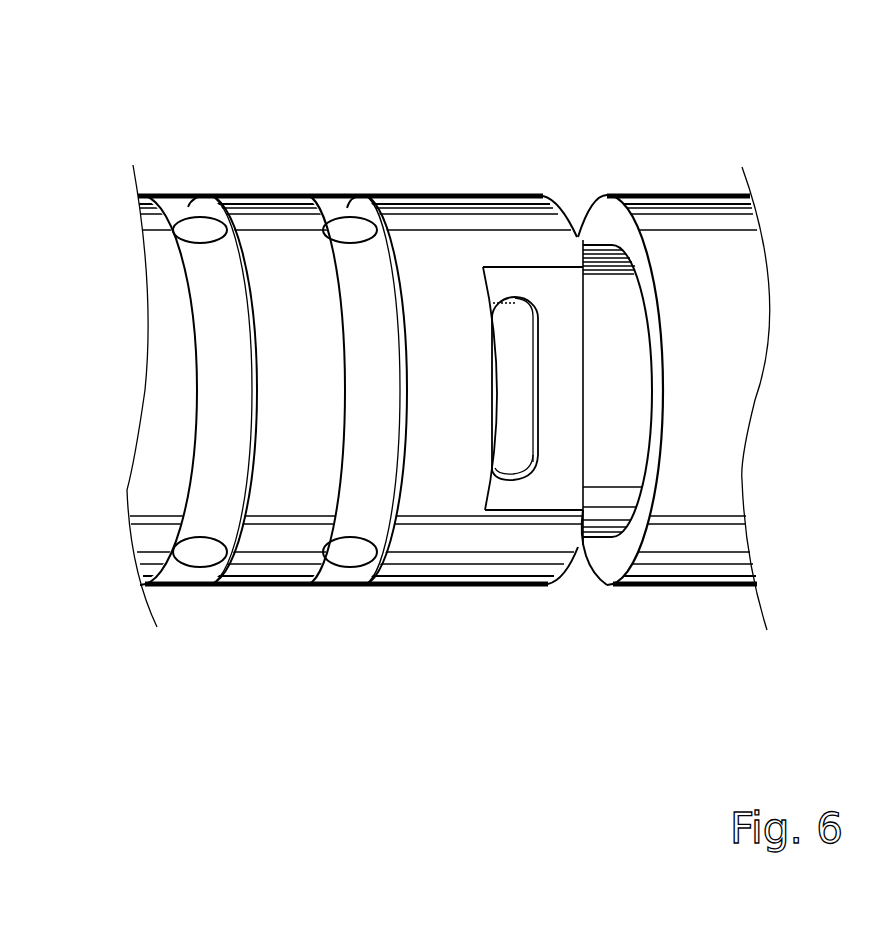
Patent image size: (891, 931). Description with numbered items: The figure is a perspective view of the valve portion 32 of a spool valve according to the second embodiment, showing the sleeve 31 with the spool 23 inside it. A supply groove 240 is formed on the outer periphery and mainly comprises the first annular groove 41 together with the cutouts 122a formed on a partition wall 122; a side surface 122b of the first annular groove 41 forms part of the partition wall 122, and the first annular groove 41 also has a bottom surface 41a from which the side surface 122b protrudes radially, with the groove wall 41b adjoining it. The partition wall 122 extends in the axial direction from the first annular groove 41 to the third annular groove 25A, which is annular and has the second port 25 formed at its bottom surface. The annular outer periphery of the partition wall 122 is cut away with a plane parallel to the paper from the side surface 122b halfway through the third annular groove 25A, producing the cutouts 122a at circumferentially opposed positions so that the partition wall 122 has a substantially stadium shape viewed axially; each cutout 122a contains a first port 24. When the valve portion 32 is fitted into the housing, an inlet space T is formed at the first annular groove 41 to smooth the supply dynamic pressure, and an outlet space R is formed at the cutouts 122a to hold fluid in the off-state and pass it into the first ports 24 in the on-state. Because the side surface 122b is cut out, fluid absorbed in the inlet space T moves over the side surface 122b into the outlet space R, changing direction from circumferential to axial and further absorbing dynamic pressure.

The partition wall 122 is at (420, 196).
The cutout 122a is at (563, 280).
The side surface 122b is at (567, 588).
The third annular groove 25A is at (322, 193).
The second port 25 is at (348, 243).
The inlet space T is at (555, 190).
The outlet space R is at (567, 436).
The spool 23 is at (523, 437).
The first port 24 is at (517, 470).
The first annular groove 41 is at (585, 198).
The bottom surface 41a is at (620, 365).
The inner surface of ring member 41b is at (624, 260).
The supply groove 240 is at (687, 73).
The sleeve 31 is at (703, 170).
The valve portion 32 is at (705, 104).